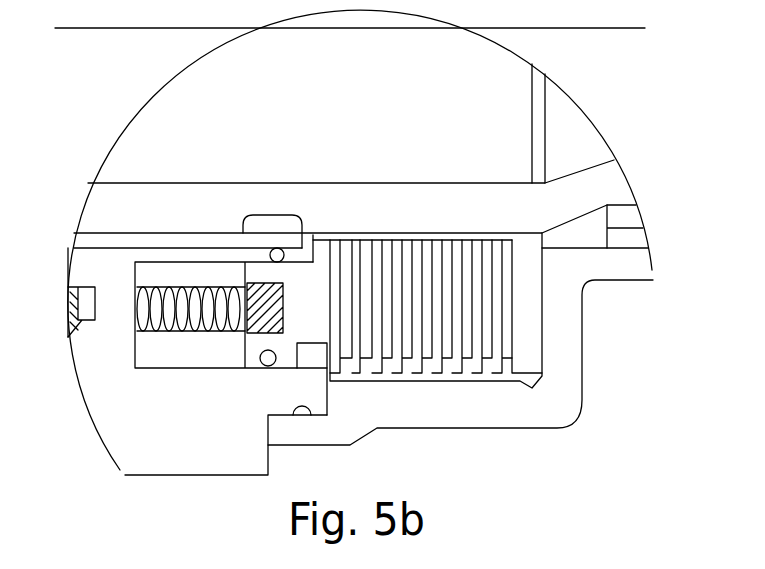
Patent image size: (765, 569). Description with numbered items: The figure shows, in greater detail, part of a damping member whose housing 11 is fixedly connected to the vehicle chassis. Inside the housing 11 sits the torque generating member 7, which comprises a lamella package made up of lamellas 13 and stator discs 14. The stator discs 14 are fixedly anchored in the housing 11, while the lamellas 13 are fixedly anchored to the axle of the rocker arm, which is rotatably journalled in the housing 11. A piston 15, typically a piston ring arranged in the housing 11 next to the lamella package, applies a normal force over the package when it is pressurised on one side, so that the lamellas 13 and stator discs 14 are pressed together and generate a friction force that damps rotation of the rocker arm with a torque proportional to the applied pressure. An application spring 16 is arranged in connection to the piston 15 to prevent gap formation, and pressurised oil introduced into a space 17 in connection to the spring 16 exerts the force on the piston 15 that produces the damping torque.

The torque generating member 7 is at (90, 411).
The housing 11 is at (253, 448).
The lamellas 13 is at (488, 355).
The stator discs 14 is at (418, 370).
The piston 15 is at (307, 320).
The application spring 16 is at (193, 315).
The space 17 is at (208, 355).